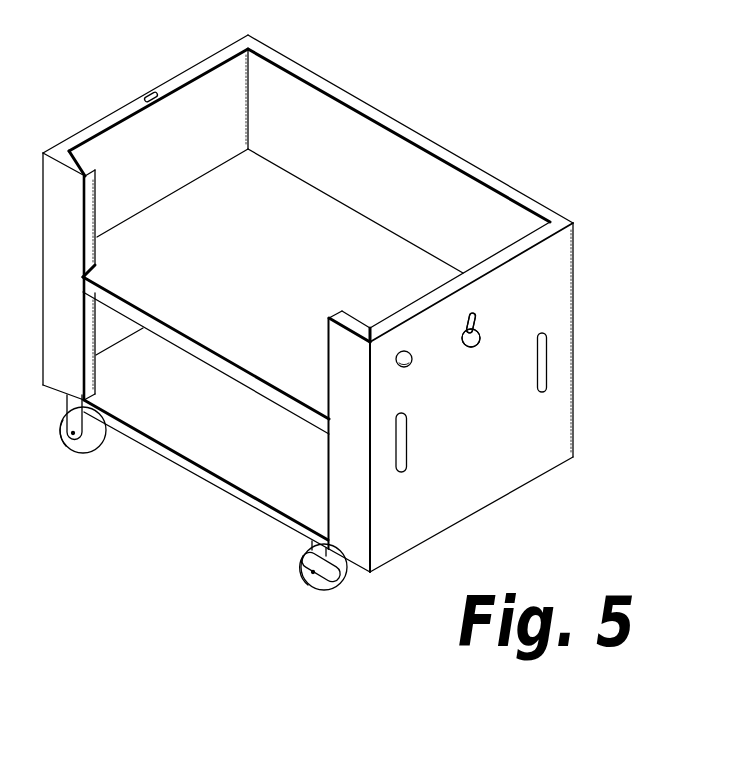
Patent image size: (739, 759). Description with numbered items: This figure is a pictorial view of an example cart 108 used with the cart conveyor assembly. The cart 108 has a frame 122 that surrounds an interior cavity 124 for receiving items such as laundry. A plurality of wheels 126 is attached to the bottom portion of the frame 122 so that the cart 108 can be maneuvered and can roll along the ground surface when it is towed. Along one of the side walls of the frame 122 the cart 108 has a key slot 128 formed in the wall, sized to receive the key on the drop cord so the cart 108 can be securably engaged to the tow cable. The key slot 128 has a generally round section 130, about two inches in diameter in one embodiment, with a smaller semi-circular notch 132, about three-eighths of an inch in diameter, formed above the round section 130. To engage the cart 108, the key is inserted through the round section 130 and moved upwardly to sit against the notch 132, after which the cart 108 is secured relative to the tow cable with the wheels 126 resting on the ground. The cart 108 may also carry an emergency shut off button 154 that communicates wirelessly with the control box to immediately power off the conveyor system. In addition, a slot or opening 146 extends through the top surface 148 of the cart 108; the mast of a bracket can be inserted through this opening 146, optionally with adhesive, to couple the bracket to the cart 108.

The cart 108 is at (545, 488).
The frame 122 is at (552, 263).
The interior cavity 124 is at (332, 228).
The wheels 126 is at (95, 446).
The key slot 128 is at (460, 364).
The round section 130 is at (481, 341).
The semi-circular notch 132 is at (477, 317).
The opening or slot 146 is at (150, 93).
The top surface 148 is at (93, 127).
The emergency shut off button 154 is at (405, 349).